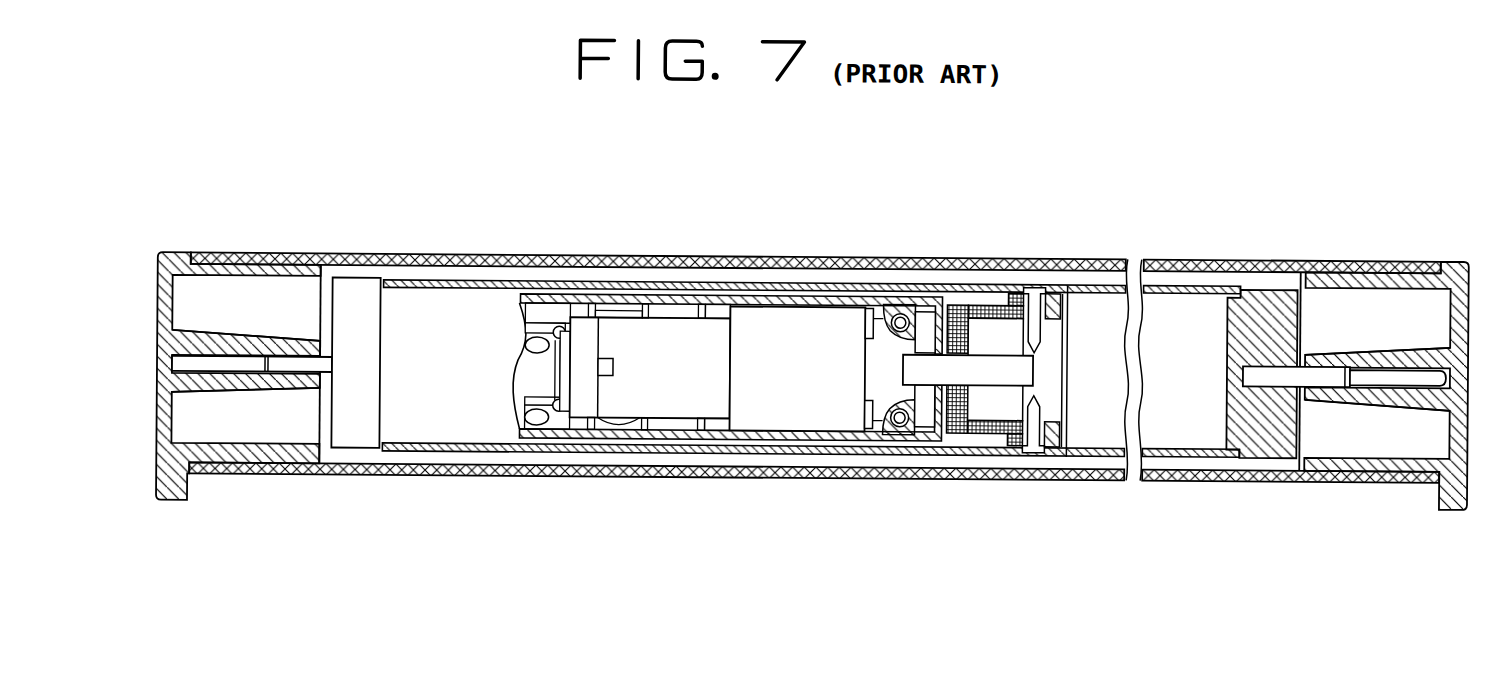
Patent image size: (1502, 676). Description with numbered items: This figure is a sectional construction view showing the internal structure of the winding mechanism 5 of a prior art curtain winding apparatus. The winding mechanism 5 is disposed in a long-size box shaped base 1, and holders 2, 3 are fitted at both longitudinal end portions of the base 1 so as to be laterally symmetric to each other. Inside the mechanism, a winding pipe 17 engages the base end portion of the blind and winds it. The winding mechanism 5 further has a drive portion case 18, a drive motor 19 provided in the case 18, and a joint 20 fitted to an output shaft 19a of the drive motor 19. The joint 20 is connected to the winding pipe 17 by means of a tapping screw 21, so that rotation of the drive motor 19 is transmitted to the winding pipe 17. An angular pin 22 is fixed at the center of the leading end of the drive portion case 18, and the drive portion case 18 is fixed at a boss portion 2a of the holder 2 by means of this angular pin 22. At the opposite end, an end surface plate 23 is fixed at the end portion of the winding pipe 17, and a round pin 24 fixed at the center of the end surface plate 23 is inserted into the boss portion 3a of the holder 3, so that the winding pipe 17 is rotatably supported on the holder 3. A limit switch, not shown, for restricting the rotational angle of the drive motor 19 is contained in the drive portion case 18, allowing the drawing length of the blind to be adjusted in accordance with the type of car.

The base 1 is at (833, 257).
The holder 2 is at (157, 302).
The boss portion 2a is at (283, 334).
The holder 3 is at (1473, 318).
The boss portion 3a is at (1370, 336).
The winding mechanism 5 is at (481, 458).
The winding pipe 17 is at (490, 283).
The drive portion case 18 is at (673, 441).
The drive motor 19 is at (800, 420).
The output shaft 19a is at (990, 388).
The joint 20 is at (981, 304).
The tapping screw 21 is at (1040, 403).
The angular pin 22 is at (296, 376).
The end surface plate 23 is at (1264, 286).
The round pin 24 is at (1327, 378).